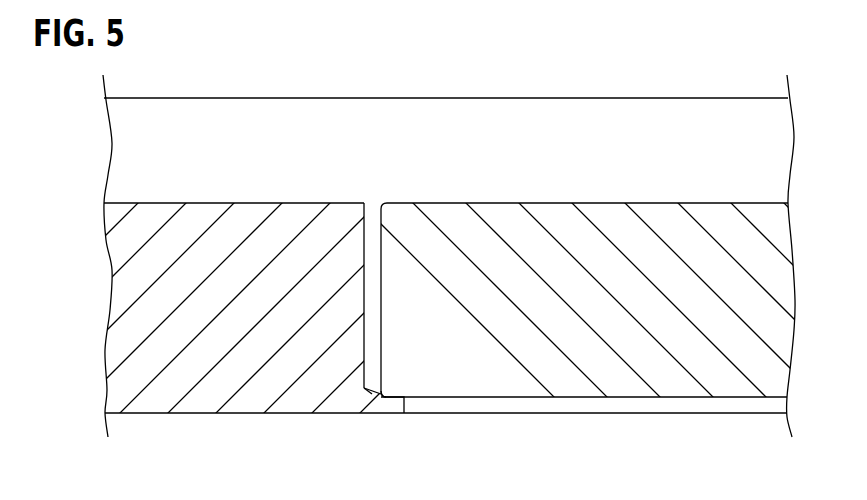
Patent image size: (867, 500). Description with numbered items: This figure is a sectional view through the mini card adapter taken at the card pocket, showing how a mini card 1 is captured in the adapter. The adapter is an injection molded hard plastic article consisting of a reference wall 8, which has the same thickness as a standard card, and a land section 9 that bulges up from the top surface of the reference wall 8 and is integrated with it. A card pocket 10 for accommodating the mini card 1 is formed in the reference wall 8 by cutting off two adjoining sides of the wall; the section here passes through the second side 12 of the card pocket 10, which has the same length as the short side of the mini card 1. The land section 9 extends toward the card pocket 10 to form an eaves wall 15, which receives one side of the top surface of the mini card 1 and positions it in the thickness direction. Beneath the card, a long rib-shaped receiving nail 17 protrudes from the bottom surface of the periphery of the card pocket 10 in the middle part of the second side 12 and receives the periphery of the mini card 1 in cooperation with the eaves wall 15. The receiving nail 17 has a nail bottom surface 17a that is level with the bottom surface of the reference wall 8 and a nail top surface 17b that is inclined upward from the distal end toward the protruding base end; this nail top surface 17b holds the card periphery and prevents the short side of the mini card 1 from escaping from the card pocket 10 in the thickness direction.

The mini card 1 is at (683, 385).
The reference wall 8 is at (195, 405).
The land section 9 is at (330, 98).
The card pocket 10 is at (680, 204).
The second side 12 is at (364, 248).
The eaves wall 15 is at (563, 125).
The receiving nail 17 is at (394, 418).
The nail bottom surface 17a is at (378, 414).
The nail top surface 17b is at (383, 386).